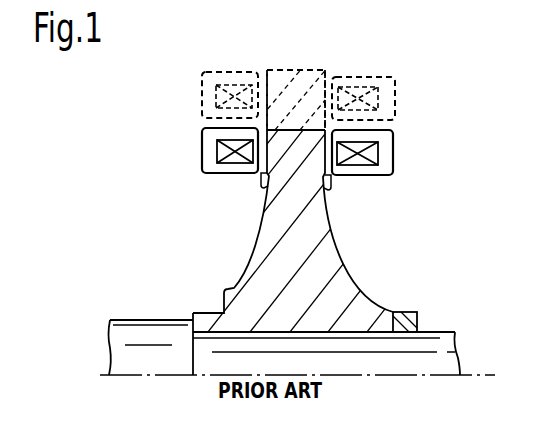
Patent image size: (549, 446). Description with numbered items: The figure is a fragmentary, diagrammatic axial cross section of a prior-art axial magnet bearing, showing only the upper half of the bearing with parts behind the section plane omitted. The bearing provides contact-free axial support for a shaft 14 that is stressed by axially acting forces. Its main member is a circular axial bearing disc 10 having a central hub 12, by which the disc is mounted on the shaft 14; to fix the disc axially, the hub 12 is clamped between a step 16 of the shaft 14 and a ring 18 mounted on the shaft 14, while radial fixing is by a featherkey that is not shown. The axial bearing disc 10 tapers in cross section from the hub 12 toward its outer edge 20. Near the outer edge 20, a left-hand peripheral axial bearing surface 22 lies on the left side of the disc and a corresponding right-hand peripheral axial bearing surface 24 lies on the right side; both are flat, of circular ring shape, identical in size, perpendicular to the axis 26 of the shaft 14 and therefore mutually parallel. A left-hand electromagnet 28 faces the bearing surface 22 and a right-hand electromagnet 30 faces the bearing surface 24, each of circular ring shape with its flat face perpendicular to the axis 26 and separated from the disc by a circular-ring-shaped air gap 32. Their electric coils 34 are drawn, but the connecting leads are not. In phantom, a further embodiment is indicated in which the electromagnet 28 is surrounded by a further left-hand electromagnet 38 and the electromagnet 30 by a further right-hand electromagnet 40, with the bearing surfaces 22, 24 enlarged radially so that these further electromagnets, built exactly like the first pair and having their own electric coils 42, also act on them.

The axial bearing disc 10 is at (340, 247).
The hub 12 is at (373, 310).
The shaft 14 is at (443, 357).
The step 16 is at (188, 322).
The ring 18 is at (417, 322).
The outer edge 20 is at (298, 130).
The left-hand peripheral axial bearing surface 22 is at (263, 181).
The right-hand peripheral axial bearing surface 24 is at (328, 178).
The axis 26 is at (473, 380).
The left-hand electromagnet 28 is at (202, 140).
The right-hand electromagnet 30 is at (385, 145).
The air gap 32 is at (266, 76).
The electric coils 34 is at (222, 152).
The further left-hand electromagnet 38 is at (202, 88).
The further right-hand electromagnet 40 is at (395, 95).
The electric coils 42 is at (231, 95).